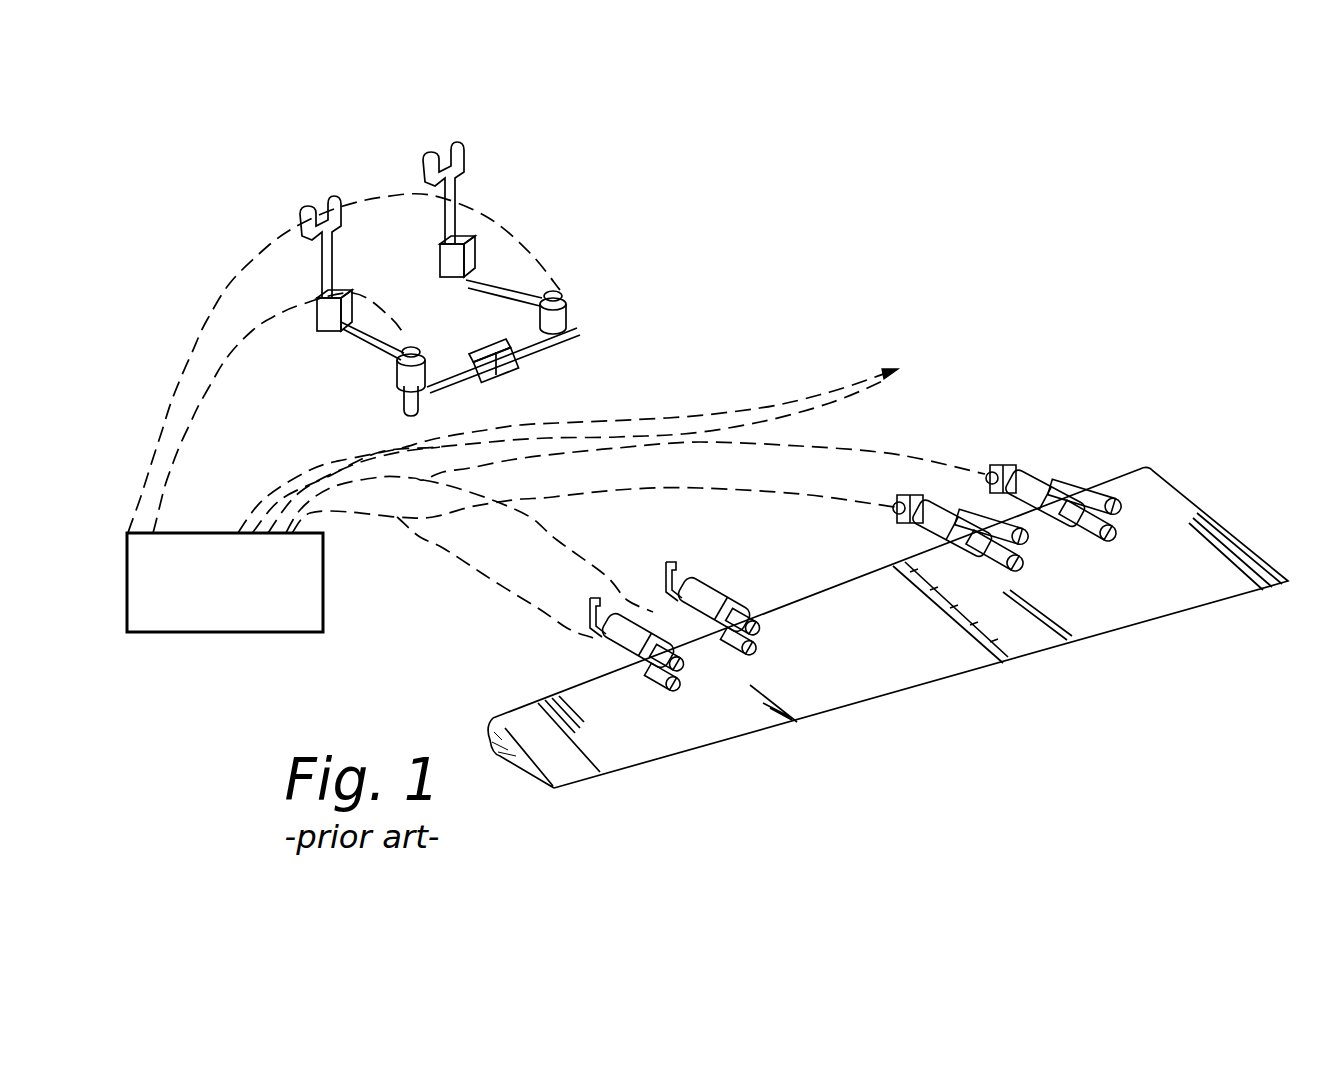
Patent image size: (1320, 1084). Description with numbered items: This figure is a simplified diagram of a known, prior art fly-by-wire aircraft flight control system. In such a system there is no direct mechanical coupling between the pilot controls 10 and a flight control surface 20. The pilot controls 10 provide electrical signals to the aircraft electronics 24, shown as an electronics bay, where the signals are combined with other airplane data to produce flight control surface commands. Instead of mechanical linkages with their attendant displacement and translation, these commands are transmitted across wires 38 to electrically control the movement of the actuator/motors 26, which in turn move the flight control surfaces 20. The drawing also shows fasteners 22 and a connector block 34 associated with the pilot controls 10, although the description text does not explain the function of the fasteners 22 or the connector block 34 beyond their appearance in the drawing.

The pilot controls 10 is at (333, 247).
The fastener 22 is at (423, 357).
The connector block 34 is at (513, 364).
The wires 38 is at (687, 402).
The aircraft electronics 24 is at (158, 633).
The actuator/motors 26 is at (597, 598).
The flight control surface 20 is at (1162, 612).